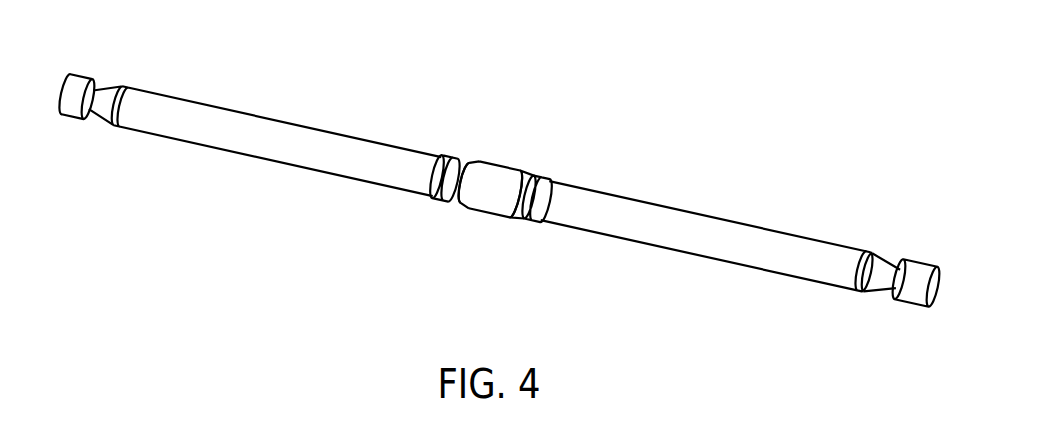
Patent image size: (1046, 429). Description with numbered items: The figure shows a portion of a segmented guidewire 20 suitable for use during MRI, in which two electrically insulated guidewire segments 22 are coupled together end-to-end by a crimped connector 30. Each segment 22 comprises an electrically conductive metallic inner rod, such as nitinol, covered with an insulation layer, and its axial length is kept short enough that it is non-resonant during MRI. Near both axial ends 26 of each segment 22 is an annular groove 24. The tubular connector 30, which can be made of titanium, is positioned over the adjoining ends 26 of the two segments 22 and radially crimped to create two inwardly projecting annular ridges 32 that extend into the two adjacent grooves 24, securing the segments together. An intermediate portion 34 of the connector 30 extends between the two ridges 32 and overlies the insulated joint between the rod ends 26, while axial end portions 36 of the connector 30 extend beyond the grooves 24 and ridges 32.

The segmented guidewire 20 is at (875, 82).
The guidewire segment 22 is at (242, 122).
The annular groove 24 is at (93, 92).
The axial end 26 is at (68, 110).
The connector 30 is at (514, 130).
The inwardly projecting annular ridge 32 is at (465, 168).
The central body 34 is at (486, 204).
The axial end portion 36 is at (445, 202).